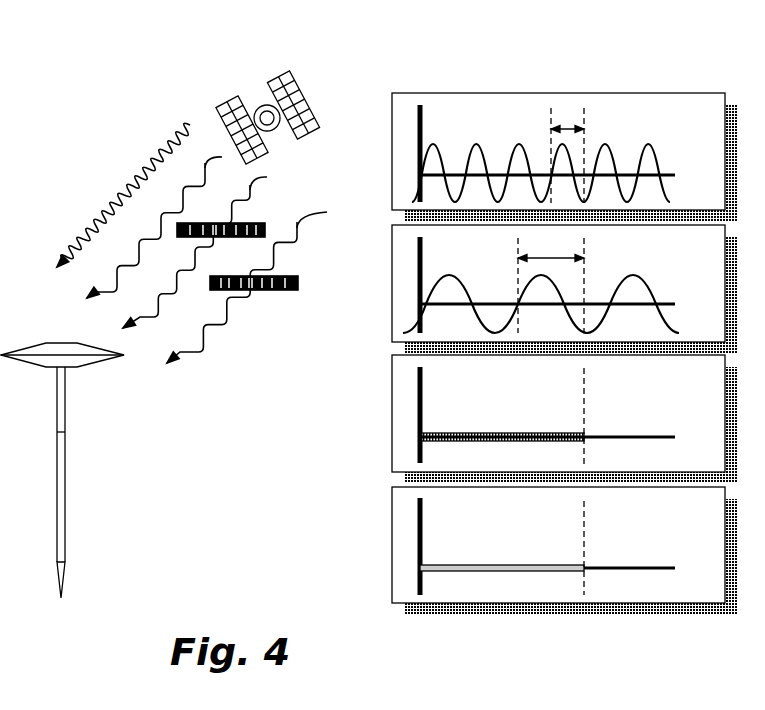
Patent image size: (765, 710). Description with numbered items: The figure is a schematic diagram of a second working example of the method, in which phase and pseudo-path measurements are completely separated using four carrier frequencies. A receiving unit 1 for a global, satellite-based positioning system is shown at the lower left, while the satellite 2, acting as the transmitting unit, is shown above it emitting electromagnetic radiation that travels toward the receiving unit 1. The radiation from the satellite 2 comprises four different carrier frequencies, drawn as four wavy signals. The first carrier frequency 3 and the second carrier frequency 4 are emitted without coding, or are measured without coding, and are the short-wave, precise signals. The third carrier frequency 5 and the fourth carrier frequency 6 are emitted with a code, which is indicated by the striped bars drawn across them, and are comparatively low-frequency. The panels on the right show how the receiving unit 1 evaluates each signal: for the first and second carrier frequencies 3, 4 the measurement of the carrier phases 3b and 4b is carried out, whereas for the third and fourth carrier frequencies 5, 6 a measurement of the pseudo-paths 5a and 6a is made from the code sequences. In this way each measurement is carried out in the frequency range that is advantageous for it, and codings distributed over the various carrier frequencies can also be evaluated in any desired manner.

The receiving unit 1 is at (68, 362).
The satellite 2 is at (279, 78).
The first carrier frequency 3 is at (188, 124).
The second carrier frequency 4 is at (203, 177).
The third carrier frequency 5 is at (257, 200).
The fourth carrier frequency 6 is at (208, 330).
The carrier phase 3b is at (580, 127).
The carrier phase 4b is at (584, 256).
The pseudo-path 5a is at (458, 435).
The pseudo-path 6a is at (458, 566).